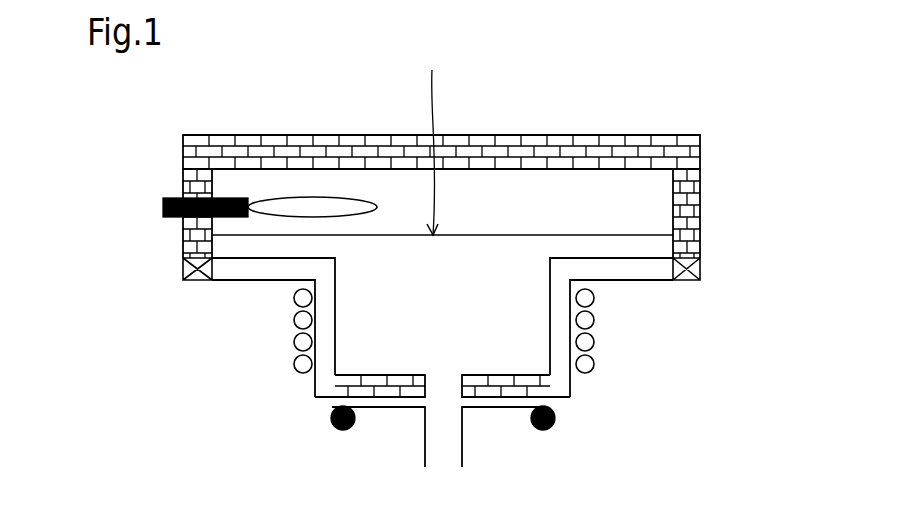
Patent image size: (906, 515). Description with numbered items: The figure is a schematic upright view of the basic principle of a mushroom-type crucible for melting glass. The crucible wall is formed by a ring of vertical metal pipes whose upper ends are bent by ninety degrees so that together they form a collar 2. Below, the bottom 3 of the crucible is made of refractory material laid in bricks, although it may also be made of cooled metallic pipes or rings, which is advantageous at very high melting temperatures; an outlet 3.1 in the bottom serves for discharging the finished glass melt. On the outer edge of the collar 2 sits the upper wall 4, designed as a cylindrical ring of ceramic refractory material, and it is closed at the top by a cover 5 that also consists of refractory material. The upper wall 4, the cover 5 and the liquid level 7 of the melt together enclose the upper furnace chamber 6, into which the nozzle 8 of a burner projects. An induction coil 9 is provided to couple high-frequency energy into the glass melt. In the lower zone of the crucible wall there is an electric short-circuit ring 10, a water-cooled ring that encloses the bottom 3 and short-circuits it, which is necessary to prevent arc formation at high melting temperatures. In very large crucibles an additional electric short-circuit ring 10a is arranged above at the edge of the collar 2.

The collar 2 is at (637, 272).
The bottom 3 is at (538, 384).
The outlet 3.1 is at (465, 456).
The upper wall 4 is at (700, 192).
The cover 5 is at (236, 135).
The upper furnace chamber 6 is at (623, 220).
The liquid level 7 is at (434, 141).
The nozzle 8 is at (247, 197).
The induction coil 9 is at (294, 366).
The electric short-circuit ring 10 is at (316, 395).
The additional electric short-circuit ring 10a is at (700, 268).